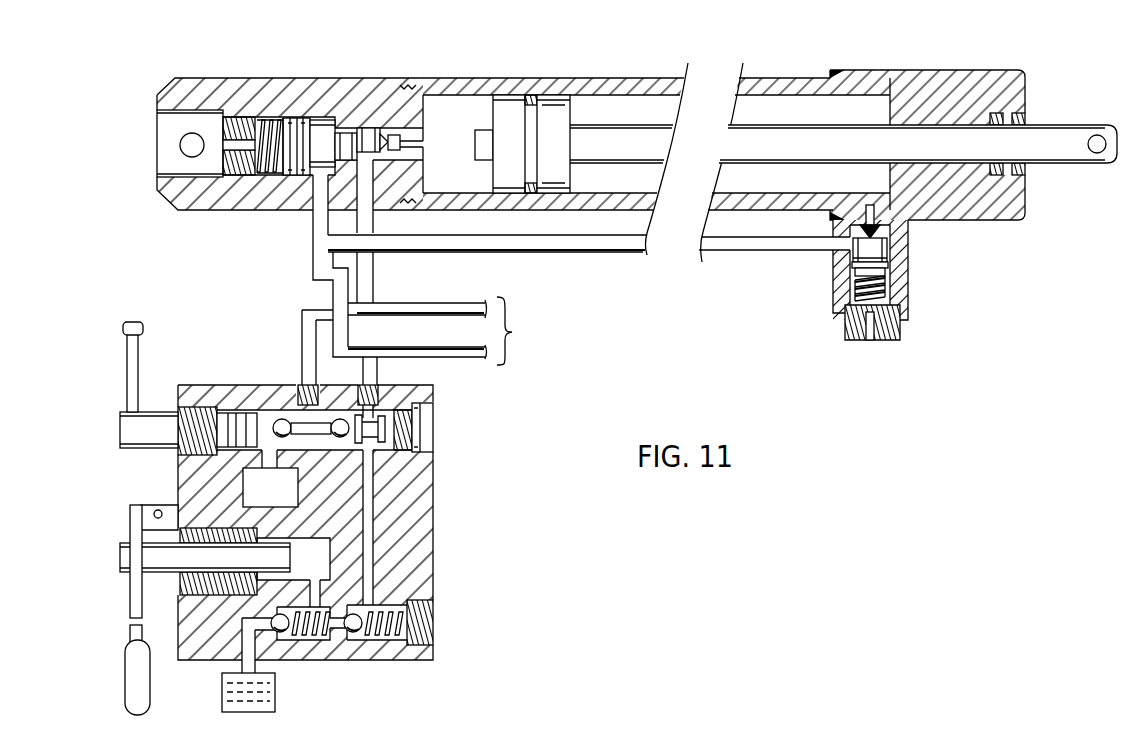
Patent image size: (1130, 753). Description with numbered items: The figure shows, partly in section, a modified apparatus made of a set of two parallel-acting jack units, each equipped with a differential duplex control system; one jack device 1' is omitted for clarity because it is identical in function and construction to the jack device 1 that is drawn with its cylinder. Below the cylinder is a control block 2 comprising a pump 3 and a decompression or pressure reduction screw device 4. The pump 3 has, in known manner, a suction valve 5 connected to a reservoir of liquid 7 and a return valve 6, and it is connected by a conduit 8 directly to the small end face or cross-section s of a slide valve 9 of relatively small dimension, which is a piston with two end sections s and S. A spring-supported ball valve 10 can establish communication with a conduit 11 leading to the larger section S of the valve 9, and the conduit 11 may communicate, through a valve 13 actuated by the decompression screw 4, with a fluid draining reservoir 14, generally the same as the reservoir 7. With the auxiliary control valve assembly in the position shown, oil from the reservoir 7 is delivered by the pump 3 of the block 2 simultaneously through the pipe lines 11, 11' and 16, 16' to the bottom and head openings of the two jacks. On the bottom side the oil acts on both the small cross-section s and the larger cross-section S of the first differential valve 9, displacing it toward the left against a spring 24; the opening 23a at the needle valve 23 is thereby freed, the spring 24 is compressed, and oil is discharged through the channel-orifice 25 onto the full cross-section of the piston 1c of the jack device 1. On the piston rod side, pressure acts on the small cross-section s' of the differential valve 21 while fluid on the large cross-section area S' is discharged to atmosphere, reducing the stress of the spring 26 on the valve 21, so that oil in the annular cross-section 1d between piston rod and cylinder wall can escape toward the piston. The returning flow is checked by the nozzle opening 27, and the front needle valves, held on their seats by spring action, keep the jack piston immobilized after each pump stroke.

The jack unit 1 is at (591, 152).
The piston of the jack device 1c is at (510, 100).
The annular cross-section of the jack device 1d is at (645, 107).
The second jack device 1' is at (515, 331).
The control block 2 is at (420, 483).
The pump 3 is at (143, 548).
The decompression screw device 4 is at (198, 405).
The suction valve 5 is at (283, 632).
The return valve 6 is at (353, 632).
The reservoir of liquid 7 is at (222, 690).
The conduit 8 is at (313, 263).
The slide valve 9 is at (289, 153).
The spring-supported ball valve 10 is at (322, 410).
The conduit 11 is at (337, 297).
The pipe line 11' is at (417, 294).
The valve 13 is at (285, 412).
The fluid draining reservoir 14 is at (281, 500).
The pipe line 16 is at (580, 264).
The pipe line 16' is at (417, 370).
The differential valve 21 is at (833, 290).
The needle valve 23 is at (377, 130).
The opening 23a is at (388, 137).
The spring 24 is at (267, 127).
The channel-orifice 25 is at (400, 136).
The spring 26 is at (845, 310).
The nozzle opening 27 is at (906, 233).
The larger end section S is at (309, 111).
The small end section s is at (349, 106).
The large cross-section area S' is at (903, 295).
The small cross-section s' is at (897, 264).